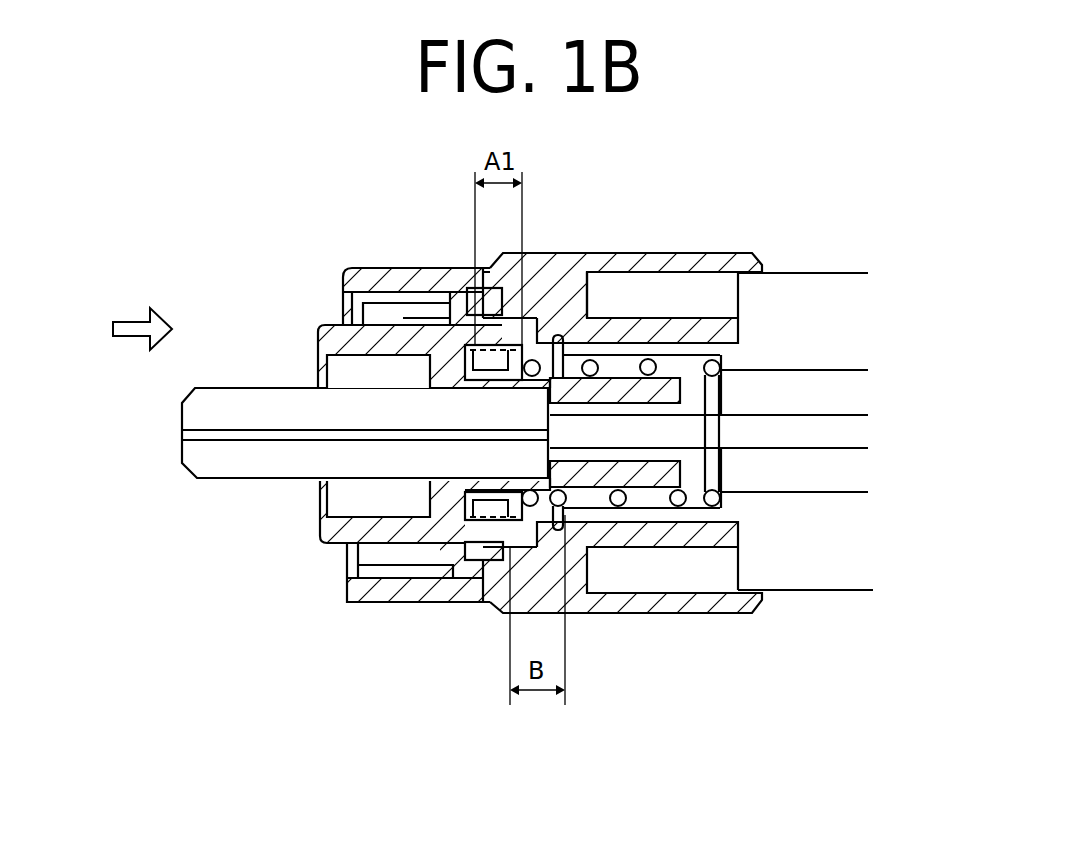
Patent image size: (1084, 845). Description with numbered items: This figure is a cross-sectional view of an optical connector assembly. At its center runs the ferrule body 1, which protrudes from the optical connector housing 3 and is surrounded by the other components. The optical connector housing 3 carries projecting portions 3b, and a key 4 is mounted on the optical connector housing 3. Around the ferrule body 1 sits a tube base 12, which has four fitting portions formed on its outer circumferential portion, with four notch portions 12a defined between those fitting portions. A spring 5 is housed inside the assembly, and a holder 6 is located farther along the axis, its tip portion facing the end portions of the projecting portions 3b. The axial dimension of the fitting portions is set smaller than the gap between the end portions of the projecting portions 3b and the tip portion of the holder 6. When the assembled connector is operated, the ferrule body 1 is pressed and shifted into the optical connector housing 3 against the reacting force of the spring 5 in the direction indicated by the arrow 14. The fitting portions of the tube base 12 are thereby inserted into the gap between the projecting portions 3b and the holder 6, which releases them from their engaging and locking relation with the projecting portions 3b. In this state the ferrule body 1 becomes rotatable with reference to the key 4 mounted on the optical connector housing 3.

The ferrule body 1 is at (220, 468).
The optical connector housing 3 is at (323, 538).
The projecting portions 3b is at (468, 290).
The key 4 is at (402, 324).
The spring 5 is at (658, 352).
The holder 6 is at (853, 549).
The tube base 12 is at (660, 480).
The notch portions 12a is at (568, 270).
The arrow 14 is at (130, 320).